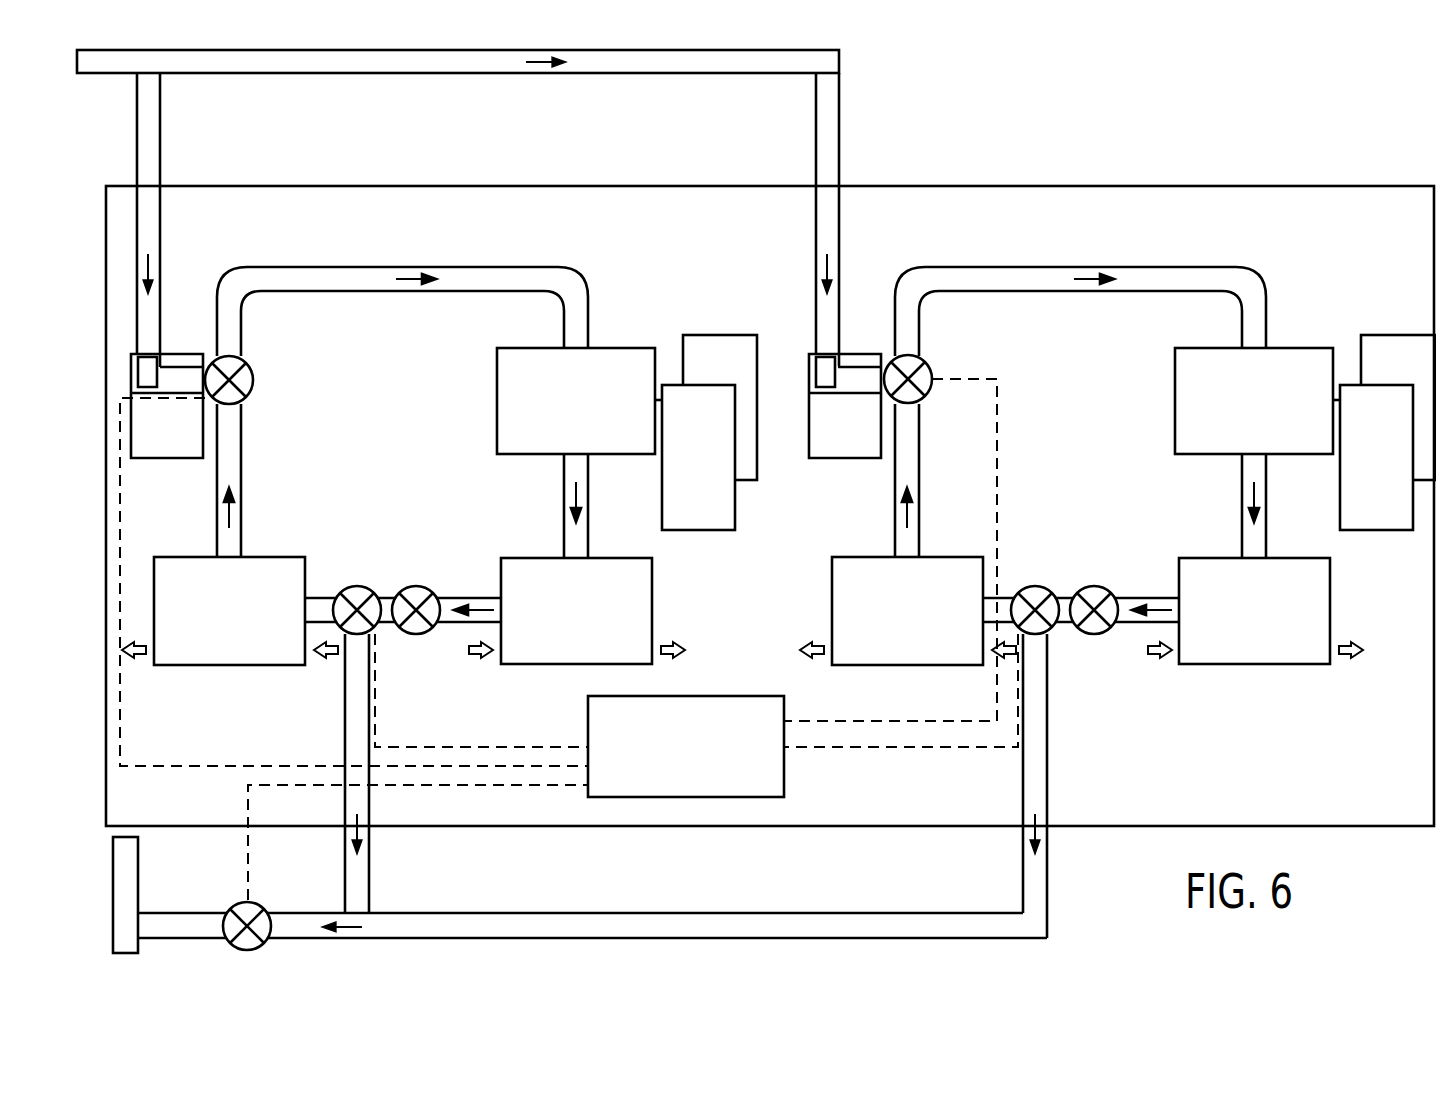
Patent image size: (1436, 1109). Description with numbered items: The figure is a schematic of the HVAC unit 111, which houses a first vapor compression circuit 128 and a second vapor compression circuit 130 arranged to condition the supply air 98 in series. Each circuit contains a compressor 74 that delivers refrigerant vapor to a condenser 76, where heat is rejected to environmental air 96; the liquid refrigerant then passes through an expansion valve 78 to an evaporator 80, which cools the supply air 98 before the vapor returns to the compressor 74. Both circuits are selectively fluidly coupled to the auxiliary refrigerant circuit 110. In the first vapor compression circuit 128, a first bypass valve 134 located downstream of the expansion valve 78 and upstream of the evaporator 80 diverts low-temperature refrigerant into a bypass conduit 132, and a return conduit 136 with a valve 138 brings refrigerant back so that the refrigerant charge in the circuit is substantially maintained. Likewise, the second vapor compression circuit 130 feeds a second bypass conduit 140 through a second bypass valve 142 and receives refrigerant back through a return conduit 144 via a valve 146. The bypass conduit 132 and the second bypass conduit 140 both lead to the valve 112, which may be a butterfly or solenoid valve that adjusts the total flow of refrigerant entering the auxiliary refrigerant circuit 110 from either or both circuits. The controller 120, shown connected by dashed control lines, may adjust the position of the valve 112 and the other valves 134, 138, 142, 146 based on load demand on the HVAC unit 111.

The compressor 74 is at (530, 348).
The condenser 76 is at (530, 558).
The expansion valve 78 is at (416, 586).
The evaporator 80 is at (228, 666).
The environmental air 96 is at (481, 659).
The supply air stream 98 is at (134, 659).
The auxiliary refrigerant circuit 110 is at (108, 74).
The HVAC unit 111 is at (106, 265).
The valve 112 is at (268, 904).
The controller 120 is at (684, 797).
The first vapor compression circuit 128 is at (402, 238).
The second vapor compression circuit 130 is at (1082, 238).
The bypass conduit 132 is at (370, 808).
The first bypass valve 134 is at (356, 586).
The return conduit 136 is at (162, 258).
The valve 138 is at (253, 368).
The second bypass conduit 140 is at (1047, 788).
The second bypass valve 142 is at (1034, 586).
The return conduit 144 is at (816, 270).
The valve 146 is at (932, 368).